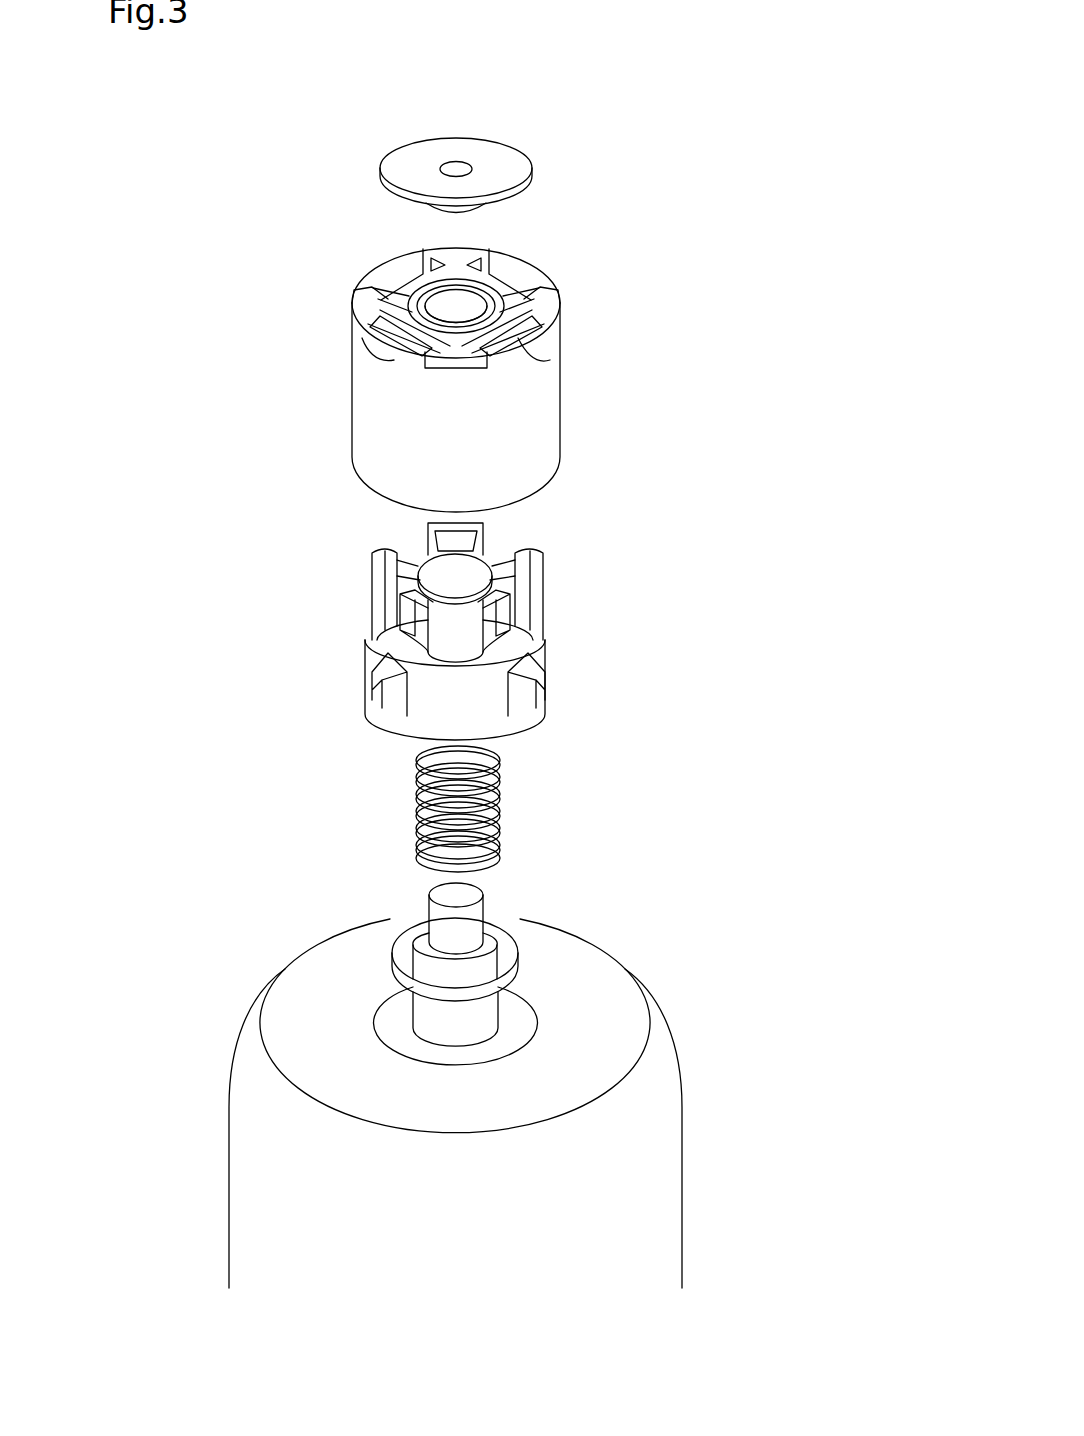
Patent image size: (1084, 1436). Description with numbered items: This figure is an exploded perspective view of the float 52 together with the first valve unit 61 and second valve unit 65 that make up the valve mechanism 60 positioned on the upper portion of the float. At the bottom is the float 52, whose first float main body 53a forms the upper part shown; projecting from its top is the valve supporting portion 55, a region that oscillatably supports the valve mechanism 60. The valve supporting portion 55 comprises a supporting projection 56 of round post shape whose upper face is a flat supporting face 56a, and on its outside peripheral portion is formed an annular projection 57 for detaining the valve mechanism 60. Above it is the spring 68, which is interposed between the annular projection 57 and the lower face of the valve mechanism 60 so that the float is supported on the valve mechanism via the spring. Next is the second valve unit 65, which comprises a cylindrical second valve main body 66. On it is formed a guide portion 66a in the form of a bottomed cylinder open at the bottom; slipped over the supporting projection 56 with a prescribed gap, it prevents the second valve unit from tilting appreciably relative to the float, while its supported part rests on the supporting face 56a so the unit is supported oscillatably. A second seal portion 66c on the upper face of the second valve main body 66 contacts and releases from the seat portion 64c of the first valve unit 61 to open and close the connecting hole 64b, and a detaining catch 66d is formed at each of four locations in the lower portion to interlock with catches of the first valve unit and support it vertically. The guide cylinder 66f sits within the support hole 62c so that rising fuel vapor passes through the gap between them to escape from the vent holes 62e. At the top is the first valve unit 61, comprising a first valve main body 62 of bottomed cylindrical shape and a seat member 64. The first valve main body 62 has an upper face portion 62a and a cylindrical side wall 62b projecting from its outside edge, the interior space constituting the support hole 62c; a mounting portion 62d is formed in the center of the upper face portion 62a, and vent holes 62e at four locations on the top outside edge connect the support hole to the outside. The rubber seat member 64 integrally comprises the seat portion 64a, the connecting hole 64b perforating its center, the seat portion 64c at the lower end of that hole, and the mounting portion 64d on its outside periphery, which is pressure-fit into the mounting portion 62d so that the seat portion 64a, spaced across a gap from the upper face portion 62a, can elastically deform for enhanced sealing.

The valve mechanism 60 is at (664, 189).
The seat member 64 is at (532, 160).
The seat portion 64a is at (415, 155).
The connecting hole 64b is at (458, 165).
The seat portion 64c is at (447, 212).
The mounting portion 64d is at (487, 205).
The first valve unit 61 is at (557, 298).
The first valve main body 62 is at (645, 335).
The upper face portion 62a is at (547, 310).
The side wall 62b is at (562, 390).
The support hole 62c is at (370, 352).
The mounting portion 62d is at (420, 305).
The vent hole 62e is at (522, 358).
The second valve unit 65 is at (545, 571).
The second valve main body 66 is at (545, 627).
The guide portion 66a is at (490, 616).
The second seal portion 66c is at (447, 573).
The detaining catch 66d is at (533, 685).
The guide cylinder 66f is at (545, 653).
The spring 68 is at (502, 790).
The supporting projection 56 is at (493, 933).
The supporting face 56a is at (467, 900).
The valve supporting portion 55 is at (412, 1010).
The annular projection 57 is at (517, 975).
The first float main body 53a is at (513, 1035).
The float 52 is at (683, 1145).